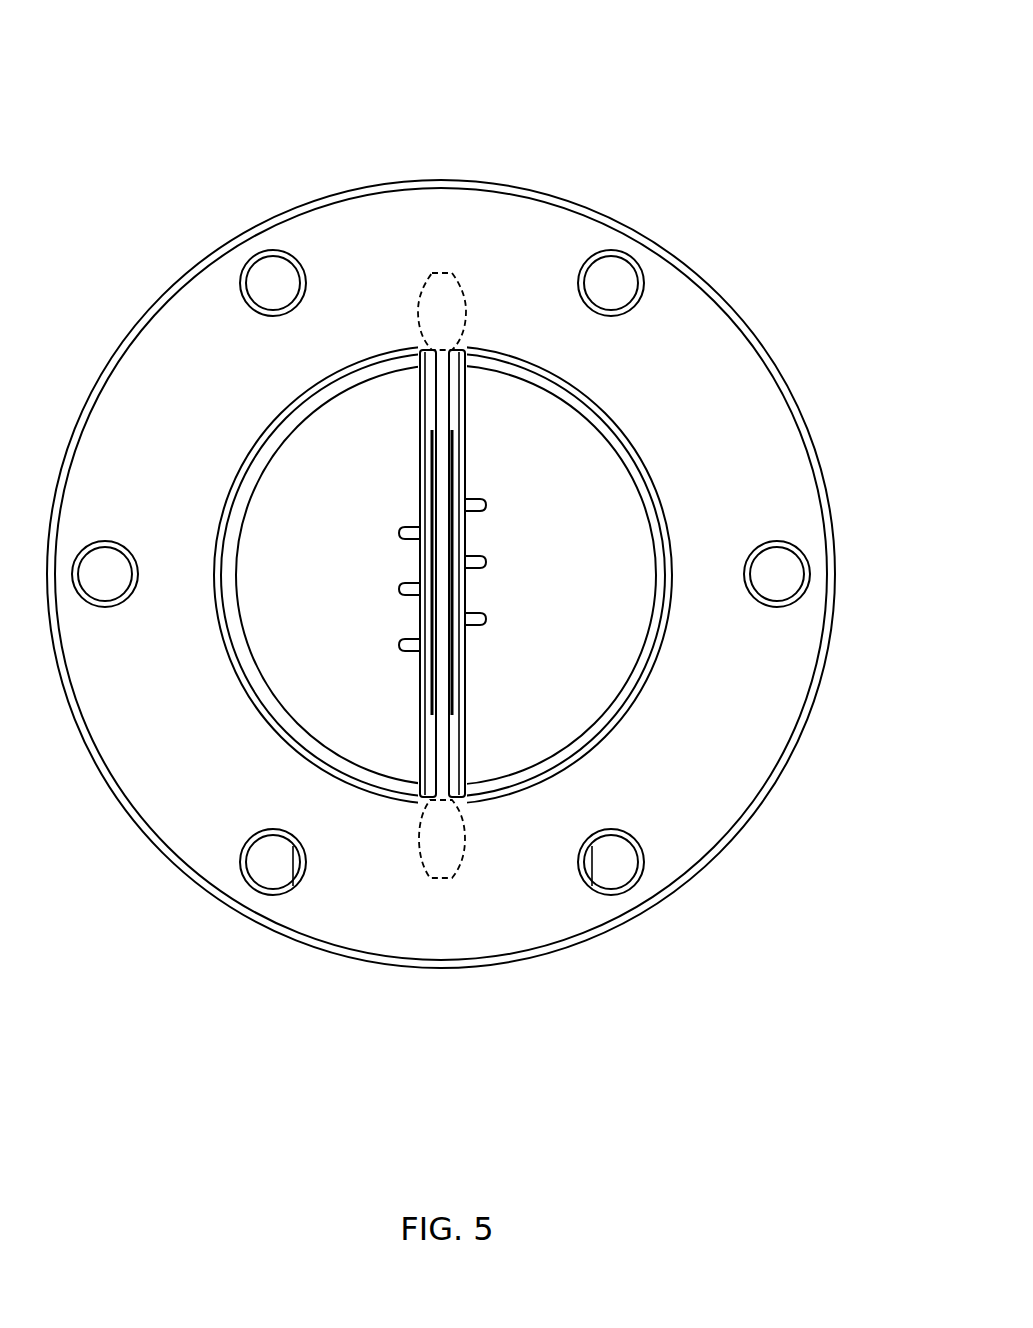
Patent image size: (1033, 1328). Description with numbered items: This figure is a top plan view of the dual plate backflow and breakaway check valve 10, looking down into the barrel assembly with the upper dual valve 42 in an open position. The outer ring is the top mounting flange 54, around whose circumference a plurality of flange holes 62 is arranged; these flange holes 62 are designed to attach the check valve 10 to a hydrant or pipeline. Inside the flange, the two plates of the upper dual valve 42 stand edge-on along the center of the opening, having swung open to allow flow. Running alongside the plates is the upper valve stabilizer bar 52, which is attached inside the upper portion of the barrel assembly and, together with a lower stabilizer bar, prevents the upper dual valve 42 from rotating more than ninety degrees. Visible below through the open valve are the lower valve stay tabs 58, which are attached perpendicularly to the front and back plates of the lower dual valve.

The dual plate backflow and breakaway check valve 10 is at (555, 98).
The upper dual valve 42 is at (419, 482).
The upper valve stabilizer bar 52 is at (438, 732).
The top mounting flange 54 is at (673, 254).
The lower valve stay tabs 58 is at (403, 650).
The flange holes 62 is at (293, 872).